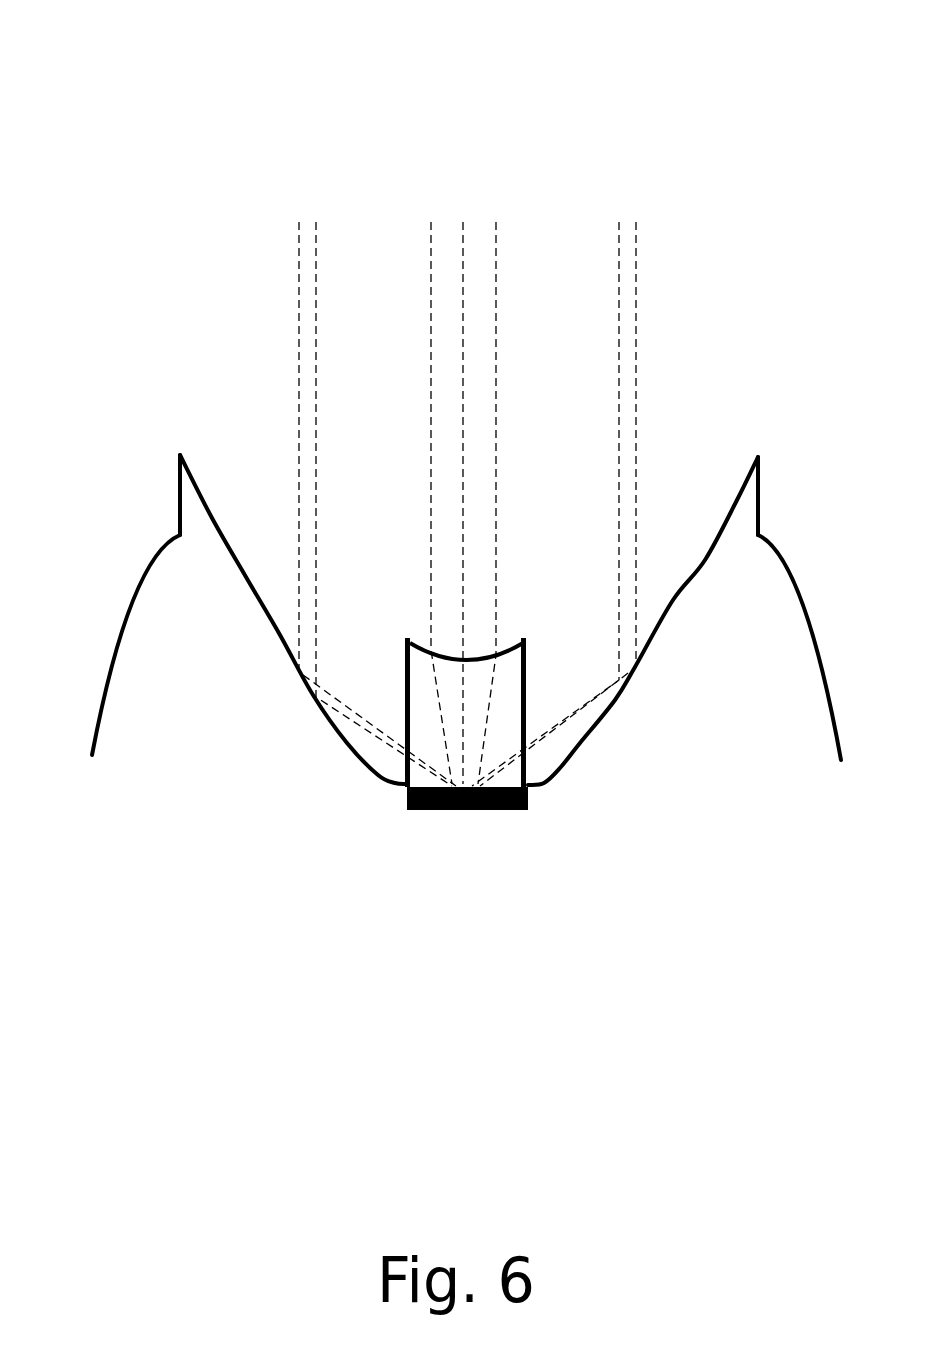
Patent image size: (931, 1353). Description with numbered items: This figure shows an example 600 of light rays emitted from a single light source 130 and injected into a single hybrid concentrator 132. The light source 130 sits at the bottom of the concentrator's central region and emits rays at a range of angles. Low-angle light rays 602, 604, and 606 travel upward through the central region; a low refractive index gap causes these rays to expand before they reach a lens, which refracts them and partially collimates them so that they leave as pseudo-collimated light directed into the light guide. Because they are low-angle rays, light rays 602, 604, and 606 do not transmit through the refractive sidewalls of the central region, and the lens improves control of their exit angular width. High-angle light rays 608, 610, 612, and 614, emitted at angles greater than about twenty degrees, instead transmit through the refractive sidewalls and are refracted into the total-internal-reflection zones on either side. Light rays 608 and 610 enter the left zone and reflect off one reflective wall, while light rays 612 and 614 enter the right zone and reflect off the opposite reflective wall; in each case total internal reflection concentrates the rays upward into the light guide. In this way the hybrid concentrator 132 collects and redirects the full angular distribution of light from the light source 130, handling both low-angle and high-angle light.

The example 600 is at (116, 48).
The low-angle light ray 602 is at (431, 207).
The low-angle light ray 604 is at (463, 207).
The low-angle light ray 606 is at (496, 207).
The high-angle light ray 608 is at (299, 207).
The high-angle light ray 610 is at (315, 207).
The high-angle light ray 612 is at (619, 207).
The high-angle light ray 614 is at (636, 207).
The hybrid concentrator 132 is at (180, 455).
The light source 130 is at (457, 812).